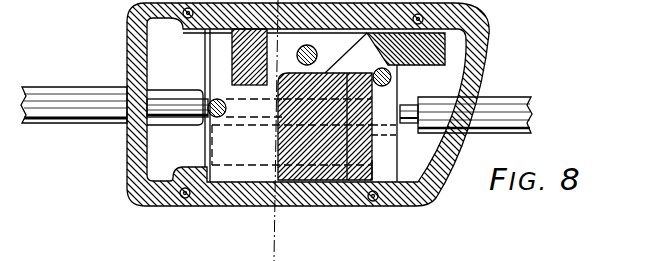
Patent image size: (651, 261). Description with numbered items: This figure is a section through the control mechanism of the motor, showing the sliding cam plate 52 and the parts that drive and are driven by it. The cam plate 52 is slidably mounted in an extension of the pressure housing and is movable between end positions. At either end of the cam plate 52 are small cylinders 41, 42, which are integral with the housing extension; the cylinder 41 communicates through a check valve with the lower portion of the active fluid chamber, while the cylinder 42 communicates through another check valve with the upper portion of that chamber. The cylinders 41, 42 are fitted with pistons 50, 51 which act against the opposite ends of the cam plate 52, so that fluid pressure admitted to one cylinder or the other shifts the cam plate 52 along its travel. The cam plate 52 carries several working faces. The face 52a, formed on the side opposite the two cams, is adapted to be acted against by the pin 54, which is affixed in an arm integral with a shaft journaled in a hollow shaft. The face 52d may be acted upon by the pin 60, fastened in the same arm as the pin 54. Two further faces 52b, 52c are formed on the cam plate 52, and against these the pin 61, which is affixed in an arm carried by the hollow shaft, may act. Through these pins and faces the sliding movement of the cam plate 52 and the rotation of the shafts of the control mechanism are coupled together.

The cylinder 41 is at (497, 103).
The cylinder 42 is at (110, 124).
The piston 50 is at (413, 104).
The piston 51 is at (162, 100).
The cam plate 52 is at (226, 74).
The face 52a is at (283, 148).
The face 52b is at (386, 183).
The face 52c is at (397, 51).
The face 52d is at (266, 54).
The pin 54 is at (227, 108).
The pin 60 is at (316, 55).
The pin 61 is at (392, 75).